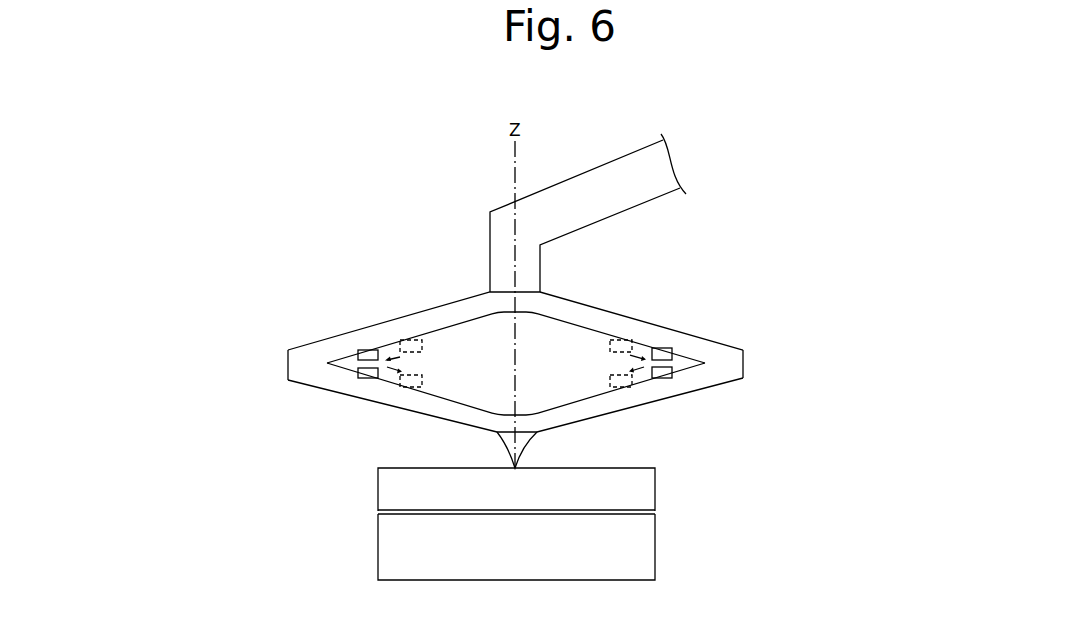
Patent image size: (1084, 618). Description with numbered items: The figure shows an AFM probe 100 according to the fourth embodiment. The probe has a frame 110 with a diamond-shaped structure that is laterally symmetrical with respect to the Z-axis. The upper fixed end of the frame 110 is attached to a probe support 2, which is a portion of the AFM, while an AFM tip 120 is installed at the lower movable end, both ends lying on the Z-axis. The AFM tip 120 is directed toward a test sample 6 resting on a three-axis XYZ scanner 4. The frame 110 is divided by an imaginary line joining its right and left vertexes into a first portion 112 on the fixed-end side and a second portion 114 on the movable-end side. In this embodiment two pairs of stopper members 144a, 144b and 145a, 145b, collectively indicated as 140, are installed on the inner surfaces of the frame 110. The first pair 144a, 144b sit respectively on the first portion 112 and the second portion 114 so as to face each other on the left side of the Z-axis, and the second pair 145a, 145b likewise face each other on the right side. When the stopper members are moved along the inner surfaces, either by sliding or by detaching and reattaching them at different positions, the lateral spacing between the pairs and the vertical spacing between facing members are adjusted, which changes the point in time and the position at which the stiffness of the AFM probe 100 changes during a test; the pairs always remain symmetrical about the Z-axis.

The probe support 2 is at (612, 163).
The AFM probe 100 is at (704, 303).
The frame 110 is at (606, 362).
The first portion 112 is at (718, 341).
The second portion 114 is at (718, 385).
The AFM tip 120 is at (523, 453).
The electrode set 140 is at (430, 411).
The stopper member 144a is at (370, 350).
The stopper member 144b is at (370, 378).
The stopper member 145a is at (660, 349).
The stopper member 145b is at (660, 379).
The test sample 6 is at (655, 491).
The XYZ scanner 4 is at (655, 546).